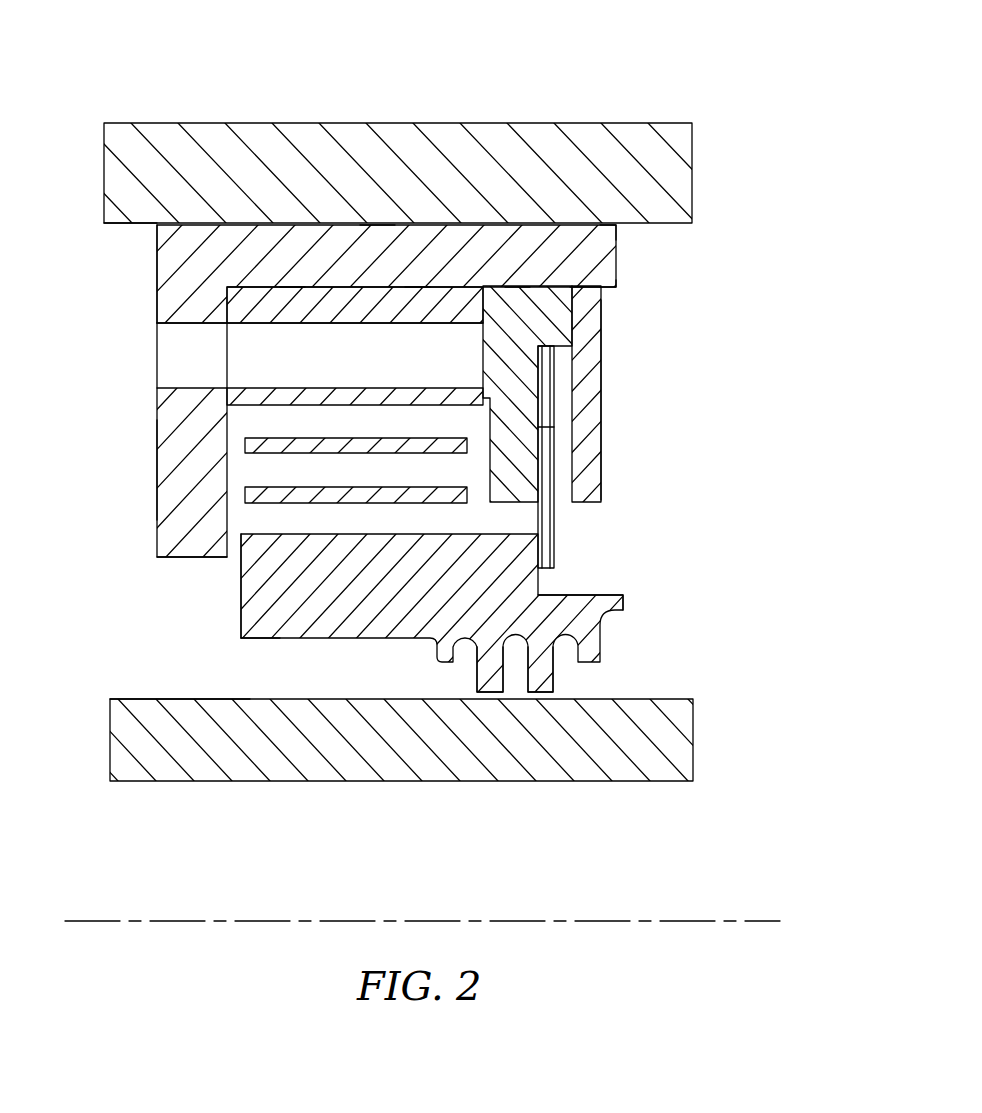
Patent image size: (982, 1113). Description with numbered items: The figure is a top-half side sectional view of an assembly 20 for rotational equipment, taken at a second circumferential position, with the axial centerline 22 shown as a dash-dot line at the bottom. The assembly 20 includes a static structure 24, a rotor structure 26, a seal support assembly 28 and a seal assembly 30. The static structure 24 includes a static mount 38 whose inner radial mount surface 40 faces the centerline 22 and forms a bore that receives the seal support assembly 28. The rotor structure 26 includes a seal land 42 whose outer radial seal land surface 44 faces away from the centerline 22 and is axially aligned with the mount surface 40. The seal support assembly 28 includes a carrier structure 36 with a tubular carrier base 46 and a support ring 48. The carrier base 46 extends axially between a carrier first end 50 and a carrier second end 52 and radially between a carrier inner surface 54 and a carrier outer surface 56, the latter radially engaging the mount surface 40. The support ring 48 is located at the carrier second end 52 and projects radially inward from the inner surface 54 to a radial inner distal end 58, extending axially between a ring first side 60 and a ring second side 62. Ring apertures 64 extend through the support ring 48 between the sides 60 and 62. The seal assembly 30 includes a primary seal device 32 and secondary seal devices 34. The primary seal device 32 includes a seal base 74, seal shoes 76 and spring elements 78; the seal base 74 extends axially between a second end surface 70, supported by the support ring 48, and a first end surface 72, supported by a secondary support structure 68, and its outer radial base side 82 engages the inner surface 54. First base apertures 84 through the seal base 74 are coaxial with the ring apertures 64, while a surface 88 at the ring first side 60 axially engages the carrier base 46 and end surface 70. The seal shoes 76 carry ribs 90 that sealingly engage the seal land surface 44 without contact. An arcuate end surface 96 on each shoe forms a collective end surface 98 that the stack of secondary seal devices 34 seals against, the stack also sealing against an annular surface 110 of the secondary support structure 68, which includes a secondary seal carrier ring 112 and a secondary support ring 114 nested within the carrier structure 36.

The assembly 20 is at (730, 70).
The axial centerline 22 is at (757, 917).
The static structure 24 is at (417, 161).
The rotor structure 26 is at (437, 740).
The seal support assembly 28 is at (672, 392).
The seal assembly 30 is at (236, 622).
The primary seal device 32 is at (236, 597).
The secondary seal devices 34 is at (556, 558).
The carrier structure 36 is at (148, 313).
The static mount 38 is at (697, 143).
The inner radial mount surface 40 is at (122, 224).
The seal land 42 is at (700, 752).
The outer radial seal land surface 44 is at (132, 699).
The carrier base 46 is at (377, 220).
The support ring 48 is at (150, 468).
The carrier first end 50 is at (616, 250).
The carrier second end 52 is at (157, 258).
The carrier inner surface 54 is at (615, 287).
The carrier outer surface 56 is at (612, 225).
The radial inner distal end 58 is at (160, 557).
The ring first side 60 is at (236, 423).
The ring second side 62 is at (157, 396).
The ring apertures 64 is at (206, 367).
The secondary support structure 68 is at (606, 322).
The second end surface 70 is at (227, 308).
The first end surface 72 is at (487, 400).
The seal base 74 is at (417, 286).
The seal shoes 76 is at (281, 641).
The spring elements 78 is at (452, 473).
The outer radial base side 82 is at (293, 285).
The first base apertures 84 is at (373, 367).
The surface 88 is at (279, 423).
The ribs 90 is at (433, 664).
The arcuate end surface 96 is at (602, 586).
The end surface 98 is at (556, 595).
The annular surface 110 is at (549, 427).
The secondary seal carrier ring 112 is at (518, 287).
The secondary support ring 114 is at (583, 287).